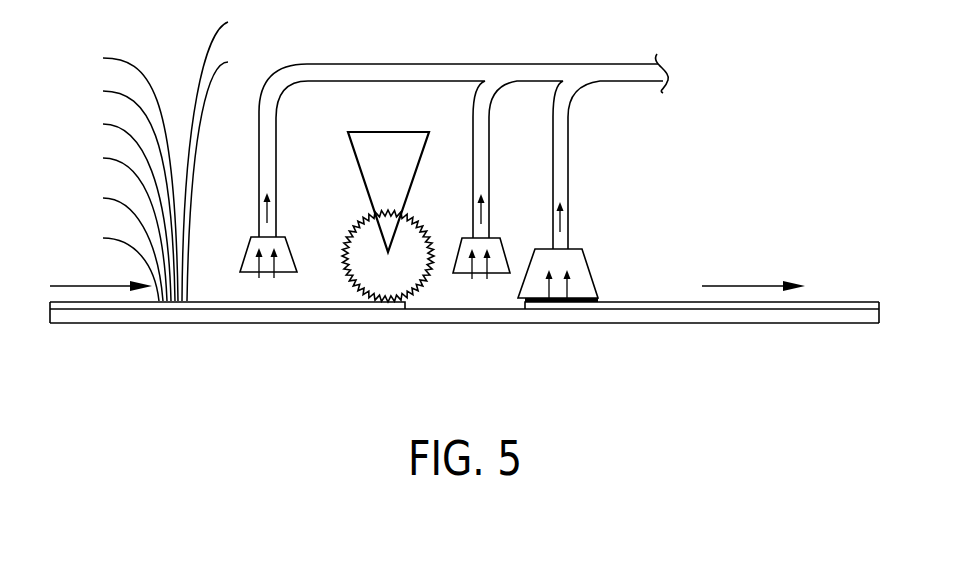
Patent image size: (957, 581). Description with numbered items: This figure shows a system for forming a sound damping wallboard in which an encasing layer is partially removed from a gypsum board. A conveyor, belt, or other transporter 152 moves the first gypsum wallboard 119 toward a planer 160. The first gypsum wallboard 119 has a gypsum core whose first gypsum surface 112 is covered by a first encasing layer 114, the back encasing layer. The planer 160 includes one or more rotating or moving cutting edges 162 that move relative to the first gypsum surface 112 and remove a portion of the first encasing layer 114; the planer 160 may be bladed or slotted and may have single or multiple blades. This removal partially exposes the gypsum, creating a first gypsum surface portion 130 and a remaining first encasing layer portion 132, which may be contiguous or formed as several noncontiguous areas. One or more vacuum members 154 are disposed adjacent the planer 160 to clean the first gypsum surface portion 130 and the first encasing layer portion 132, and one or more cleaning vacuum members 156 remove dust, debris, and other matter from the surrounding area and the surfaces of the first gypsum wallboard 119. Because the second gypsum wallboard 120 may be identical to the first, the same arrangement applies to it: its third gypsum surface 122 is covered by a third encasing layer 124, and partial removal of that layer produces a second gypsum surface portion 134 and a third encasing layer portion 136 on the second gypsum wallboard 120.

The first gypsum surface 112 is at (116, 190).
The first encasing layer 114 is at (228, 175).
The first gypsum wallboard 119 is at (173, 303).
The second gypsum wallboard 120 is at (238, 305).
The third gypsum surface 122 is at (118, 173).
The third encasing layer 124 is at (226, 157).
The first gypsum surface portion 130 is at (108, 262).
The first encasing layer portion 132 is at (112, 222).
The second gypsum surface portion 134 is at (110, 243).
The third encasing layer portion 136 is at (114, 206).
The transporter 152 is at (338, 322).
The vacuum member 154 is at (290, 258).
The cleaning vacuum member 156 is at (588, 263).
The planer 160 is at (368, 237).
The cutting edge 162 is at (430, 233).